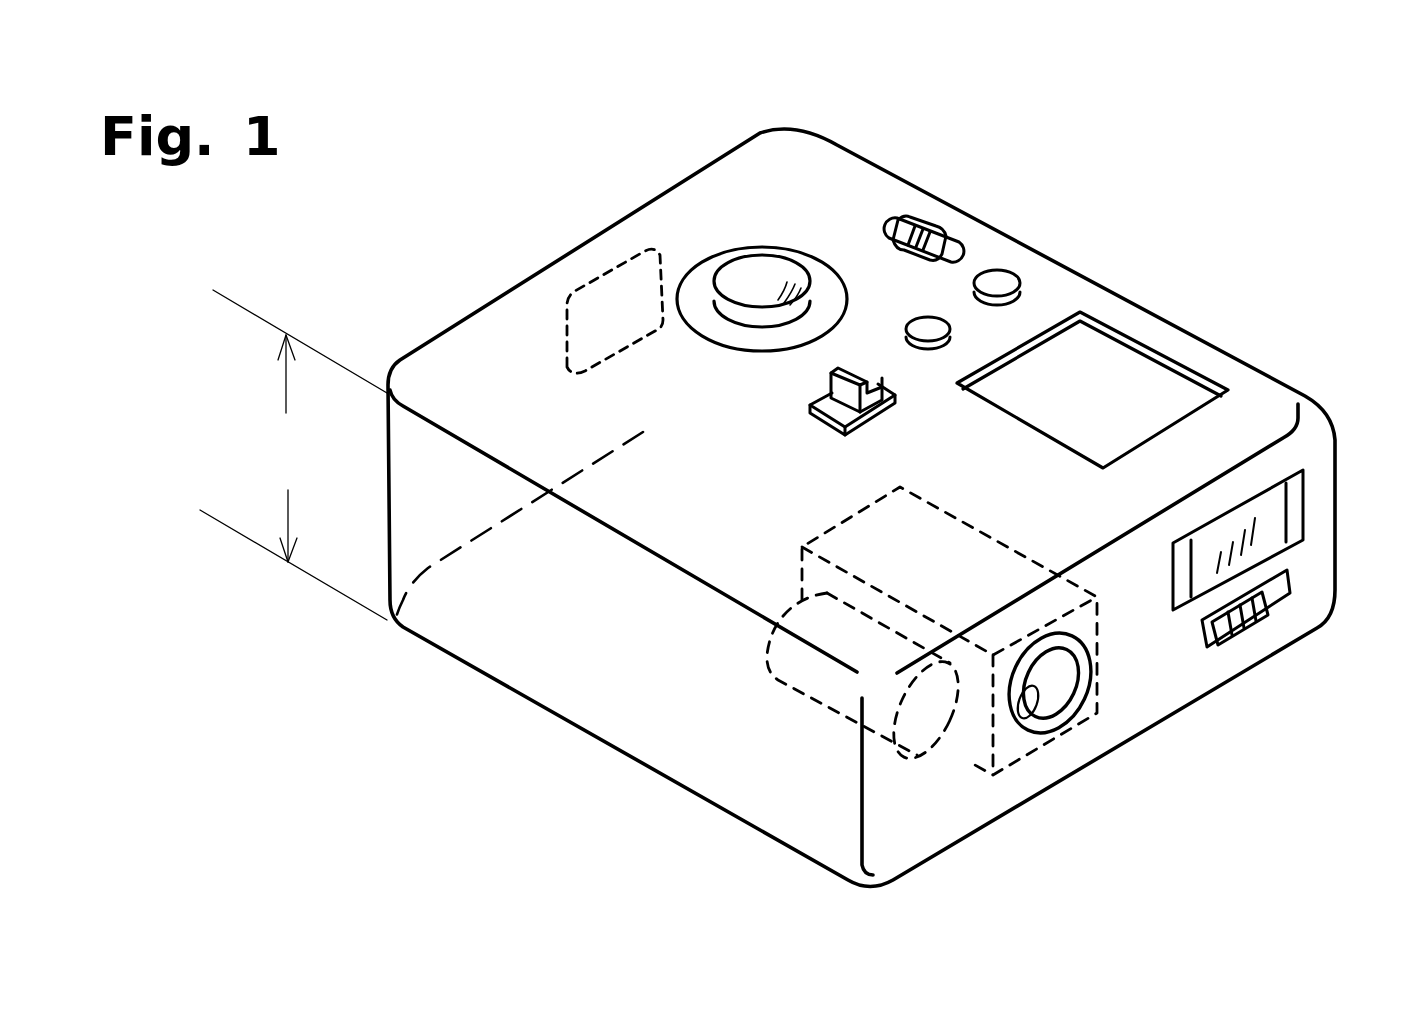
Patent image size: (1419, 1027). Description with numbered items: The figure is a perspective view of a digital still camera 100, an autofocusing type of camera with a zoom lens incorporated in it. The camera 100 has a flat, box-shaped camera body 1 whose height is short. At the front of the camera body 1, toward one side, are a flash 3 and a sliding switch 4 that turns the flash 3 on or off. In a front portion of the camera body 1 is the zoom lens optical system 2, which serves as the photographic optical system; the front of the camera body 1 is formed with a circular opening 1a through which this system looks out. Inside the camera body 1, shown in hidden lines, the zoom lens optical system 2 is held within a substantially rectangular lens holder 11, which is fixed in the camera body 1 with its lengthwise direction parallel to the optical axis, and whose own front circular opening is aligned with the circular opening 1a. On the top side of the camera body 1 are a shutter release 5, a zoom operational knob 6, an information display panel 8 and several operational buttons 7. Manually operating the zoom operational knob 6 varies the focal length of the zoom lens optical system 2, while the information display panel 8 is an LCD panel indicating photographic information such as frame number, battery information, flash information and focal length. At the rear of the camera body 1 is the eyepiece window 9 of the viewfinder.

The camera 100 is at (540, 58).
The camera body 1 is at (643, 737).
The circular opening 1a is at (1027, 690).
The zoom lens optical system 2 is at (1043, 707).
The flash 3 is at (1258, 533).
The sliding switch 4 is at (1237, 628).
The shutter release 5 is at (773, 263).
The zoom operational knob 6 is at (818, 415).
The operational buttons 7 is at (957, 280).
The information display panel 8 is at (1127, 383).
The eyepiece window 9 is at (609, 293).
The lens holder 11 is at (1100, 667).